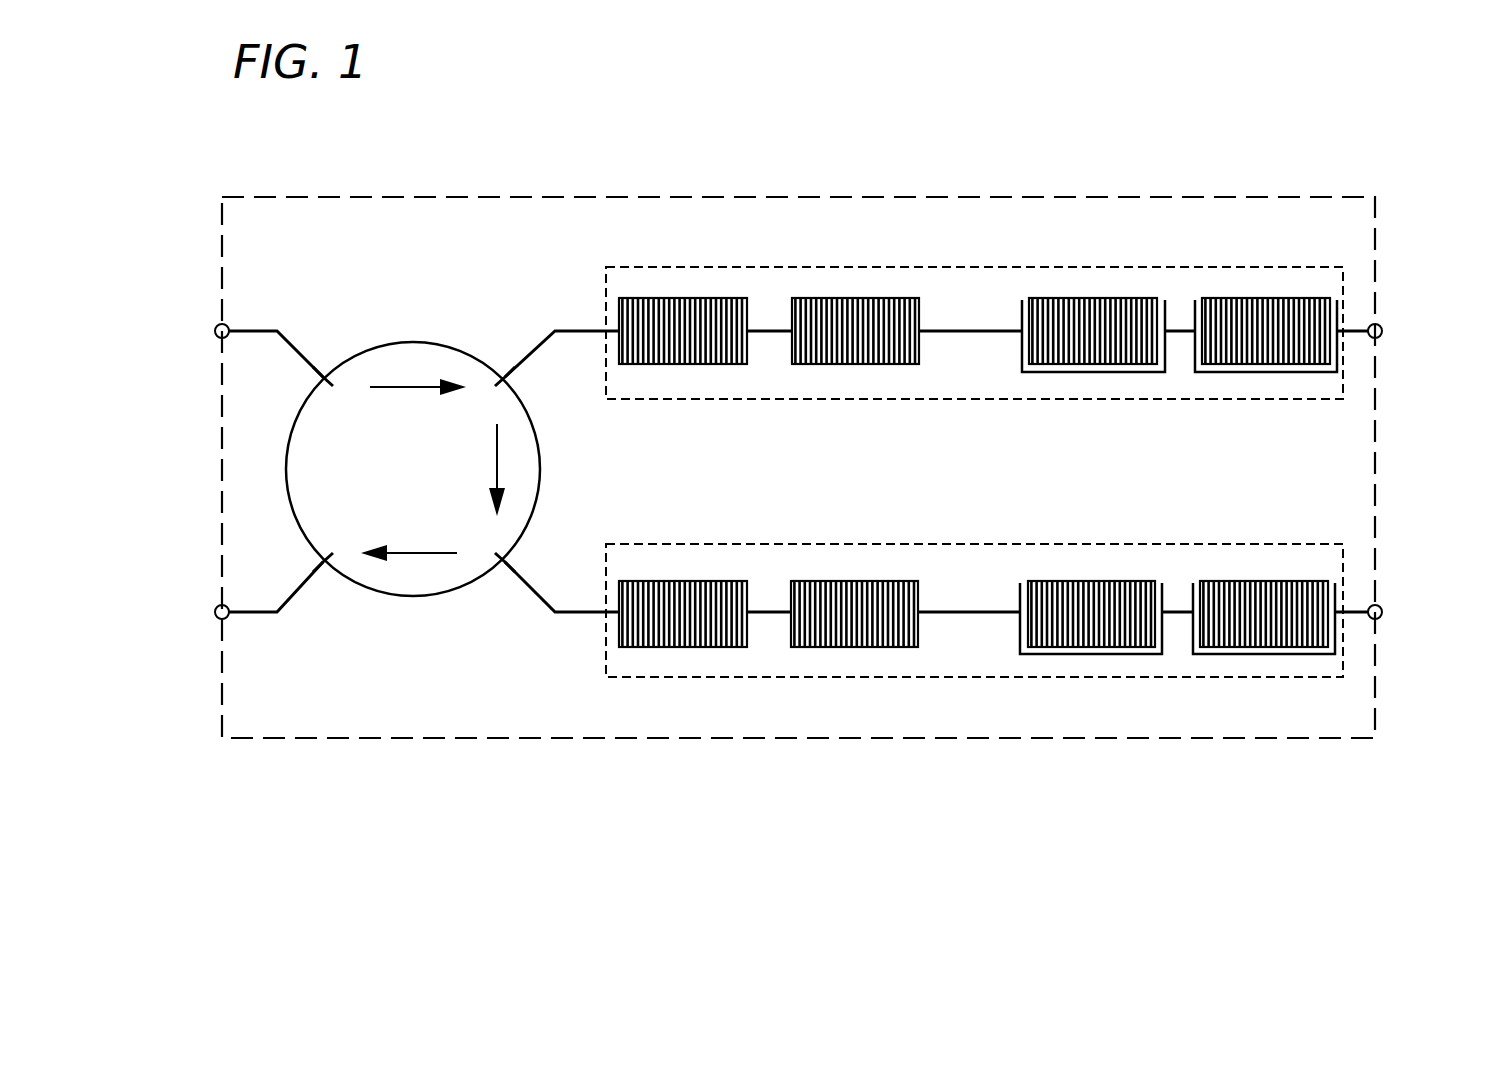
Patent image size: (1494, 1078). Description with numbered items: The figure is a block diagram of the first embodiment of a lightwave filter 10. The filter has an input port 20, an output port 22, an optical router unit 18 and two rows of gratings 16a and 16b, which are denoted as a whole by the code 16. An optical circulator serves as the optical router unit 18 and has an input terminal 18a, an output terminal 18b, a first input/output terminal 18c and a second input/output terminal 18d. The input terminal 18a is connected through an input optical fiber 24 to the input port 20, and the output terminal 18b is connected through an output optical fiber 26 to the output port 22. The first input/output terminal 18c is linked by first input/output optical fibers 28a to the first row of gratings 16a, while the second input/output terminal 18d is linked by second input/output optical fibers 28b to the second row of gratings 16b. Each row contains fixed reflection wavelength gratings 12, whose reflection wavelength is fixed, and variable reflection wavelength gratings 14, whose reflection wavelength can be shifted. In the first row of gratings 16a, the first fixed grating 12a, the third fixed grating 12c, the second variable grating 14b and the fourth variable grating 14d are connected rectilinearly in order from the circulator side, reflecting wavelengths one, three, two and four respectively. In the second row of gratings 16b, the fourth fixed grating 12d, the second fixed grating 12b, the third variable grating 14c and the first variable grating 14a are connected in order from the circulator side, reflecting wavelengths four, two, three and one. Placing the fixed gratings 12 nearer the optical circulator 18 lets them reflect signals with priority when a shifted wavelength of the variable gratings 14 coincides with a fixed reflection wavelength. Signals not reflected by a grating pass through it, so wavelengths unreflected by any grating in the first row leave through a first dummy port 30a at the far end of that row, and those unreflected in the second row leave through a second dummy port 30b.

The lightwave filter 10 is at (1340, 197).
The fixed reflection wavelength gratings 12 is at (769, 470).
The first fixed grating 12a is at (708, 298).
The second fixed grating 12b is at (854, 693).
The third fixed grating 12c is at (826, 298).
The fourth fixed grating 12d is at (730, 648).
The variable reflection wavelength gratings 14 is at (1178, 471).
The first variable grating 14a is at (1264, 693).
The second variable grating 14b is at (1115, 298).
The third variable grating 14c is at (1123, 654).
The fourth variable grating 14d is at (1232, 298).
The rows of gratings 16 is at (1049, 472).
The first row of gratings 16a is at (1343, 377).
The second row of gratings 16b is at (1025, 609).
The optical router unit 18 is at (411, 341).
The input terminal 18a is at (323, 370).
The output terminal 18b is at (323, 569).
The first input/output terminal 18c is at (505, 370).
The second input/output terminal 18d is at (505, 569).
The input port 20 is at (213, 320).
The output port 22 is at (213, 623).
The input optical fiber 24 is at (260, 328).
The output optical fiber 26 is at (257, 615).
The first input/output optical fibers 28a is at (578, 328).
The second input/output optical fibers 28b is at (578, 615).
The first dummy port 30a is at (1387, 317).
The second dummy port 30b is at (1387, 628).